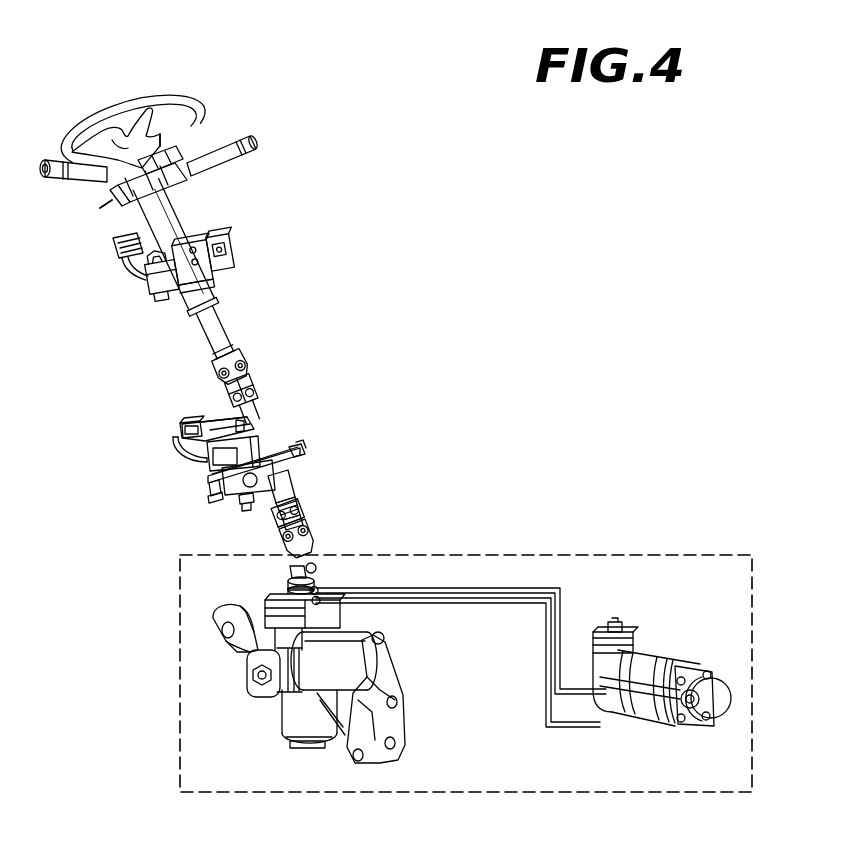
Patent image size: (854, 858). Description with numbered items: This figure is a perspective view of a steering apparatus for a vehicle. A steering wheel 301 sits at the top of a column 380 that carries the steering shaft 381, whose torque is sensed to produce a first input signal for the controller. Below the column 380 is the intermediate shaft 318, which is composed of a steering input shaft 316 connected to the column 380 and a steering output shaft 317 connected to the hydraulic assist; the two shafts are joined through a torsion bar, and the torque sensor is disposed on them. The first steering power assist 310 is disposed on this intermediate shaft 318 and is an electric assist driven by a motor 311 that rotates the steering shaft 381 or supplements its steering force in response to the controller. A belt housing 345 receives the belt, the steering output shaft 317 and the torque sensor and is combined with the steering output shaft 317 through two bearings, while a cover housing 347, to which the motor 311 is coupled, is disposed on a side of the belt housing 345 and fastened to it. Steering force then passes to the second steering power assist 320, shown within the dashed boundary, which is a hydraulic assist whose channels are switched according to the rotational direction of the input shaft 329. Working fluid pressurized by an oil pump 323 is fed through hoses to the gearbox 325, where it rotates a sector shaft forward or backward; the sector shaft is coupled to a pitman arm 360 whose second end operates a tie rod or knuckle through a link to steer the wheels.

The steering wheel 301 is at (170, 100).
The column 380 is at (251, 240).
The steering shaft 381 is at (220, 336).
The first steering power assist 310 is at (170, 412).
The motor 311 is at (207, 455).
The cover housing 347 is at (210, 481).
The belt housing 345 is at (237, 488).
The steering input shaft 316 is at (263, 428).
The steering output shaft 317 is at (297, 500).
The intermediate shaft 318 is at (373, 397).
The input shaft 329 is at (313, 563).
The second steering power assist 320 is at (165, 564).
The oil pump 323 is at (657, 663).
The pitman arm 360 is at (233, 643).
The gearbox 325 is at (290, 713).